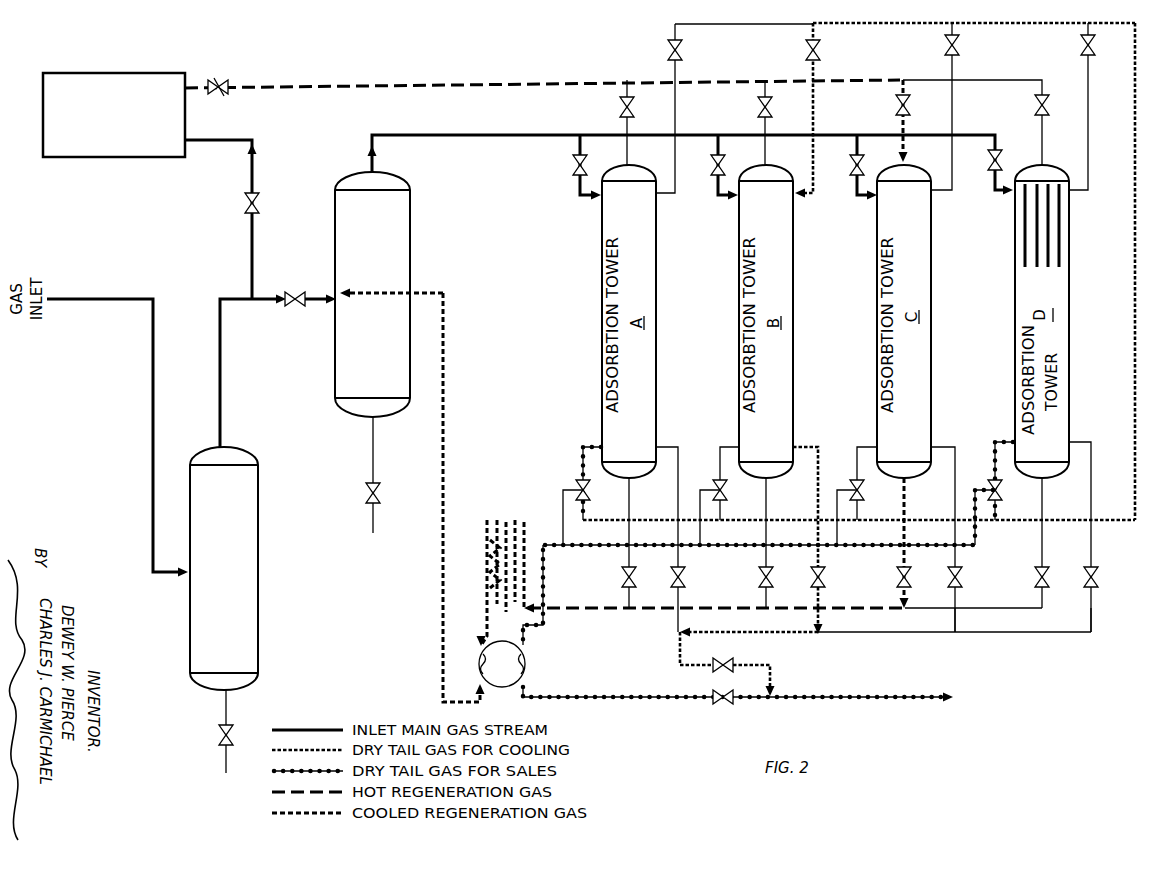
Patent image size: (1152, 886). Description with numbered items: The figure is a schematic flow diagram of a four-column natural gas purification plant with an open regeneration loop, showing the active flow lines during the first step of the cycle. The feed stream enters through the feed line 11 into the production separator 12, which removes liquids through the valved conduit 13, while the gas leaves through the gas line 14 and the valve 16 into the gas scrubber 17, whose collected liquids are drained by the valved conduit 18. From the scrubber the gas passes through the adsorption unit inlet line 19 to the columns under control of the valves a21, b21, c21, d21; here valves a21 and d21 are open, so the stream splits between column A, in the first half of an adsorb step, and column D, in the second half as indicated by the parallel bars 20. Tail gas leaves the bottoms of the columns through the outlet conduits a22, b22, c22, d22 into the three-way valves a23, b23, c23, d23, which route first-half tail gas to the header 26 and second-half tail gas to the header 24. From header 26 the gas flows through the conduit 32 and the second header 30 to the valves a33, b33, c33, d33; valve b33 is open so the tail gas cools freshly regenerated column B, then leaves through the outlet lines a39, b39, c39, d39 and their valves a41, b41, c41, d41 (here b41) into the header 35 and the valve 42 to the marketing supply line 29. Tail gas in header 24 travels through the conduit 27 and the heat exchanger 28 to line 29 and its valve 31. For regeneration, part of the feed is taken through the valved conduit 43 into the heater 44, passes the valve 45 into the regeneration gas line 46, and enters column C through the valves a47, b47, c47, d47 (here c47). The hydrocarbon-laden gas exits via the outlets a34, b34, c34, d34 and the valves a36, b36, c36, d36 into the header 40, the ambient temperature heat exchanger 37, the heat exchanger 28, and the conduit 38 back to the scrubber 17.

The feed line 11 is at (152, 367).
The production separator 12 is at (245, 483).
The valved conduit 13 is at (227, 711).
The gas line 14 is at (221, 367).
The valve 16 is at (296, 295).
The gas scrubber 17 is at (388, 209).
The valved conduit 18 is at (372, 450).
The adsorption unit inlet line 19 is at (492, 134).
The parallel bars 20 is at (1024, 227).
The header 24 is at (578, 548).
The header 26 is at (587, 520).
The conduit 27 is at (544, 567).
The heat exchanger 28 is at (526, 664).
The marketing supply line 29 is at (832, 696).
The second header 30 is at (1008, 21).
The valve 31 is at (726, 702).
The conduit 32 is at (1134, 297).
The header 35 is at (1008, 633).
The ambient temperature heat exchanger 37 is at (485, 522).
The conduit 38 is at (444, 360).
The header 40 is at (585, 611).
The valve 42 is at (726, 660).
The valved conduit 43 is at (253, 172).
The heater 44 is at (114, 115).
The valve 45 is at (212, 82).
The regeneration gas line 46 is at (358, 86).
The valve a21 is at (578, 165).
The valve b21 is at (716, 165).
The valve c21 is at (855, 165).
The valve d21 is at (994, 160).
The outlet conduit a22 is at (600, 445).
The outlet conduit b22 is at (738, 445).
The outlet conduit c22 is at (876, 445).
The outlet conduit d22 is at (1013, 440).
The three-way valve a23 is at (578, 484).
The three-way valve b23 is at (715, 482).
The three-way valve c23 is at (853, 482).
The three-way valve d23 is at (990, 480).
The valve a33 is at (682, 50).
The valve b33 is at (820, 50).
The valve c33 is at (959, 45).
The valve d33 is at (1081, 45).
The outlet a34 is at (630, 492).
The outlet b34 is at (767, 492).
The outlet c34 is at (905, 492).
The outlet d34 is at (1043, 492).
The valve a36 is at (622, 577).
The valve b36 is at (759, 577).
The valve c36 is at (897, 577).
The valve d36 is at (1035, 577).
The outlet line a39 is at (681, 620).
The outlet line b39 is at (820, 620).
The outlet line c39 is at (956, 617).
The outlet line d39 is at (1092, 617).
The valve a41 is at (686, 573).
The valve b41 is at (826, 573).
The valve c41 is at (963, 573).
The valve d41 is at (1099, 573).
The valve a47 is at (620, 107).
The valve b47 is at (758, 107).
The valve c47 is at (896, 105).
The valve d47 is at (1035, 105).